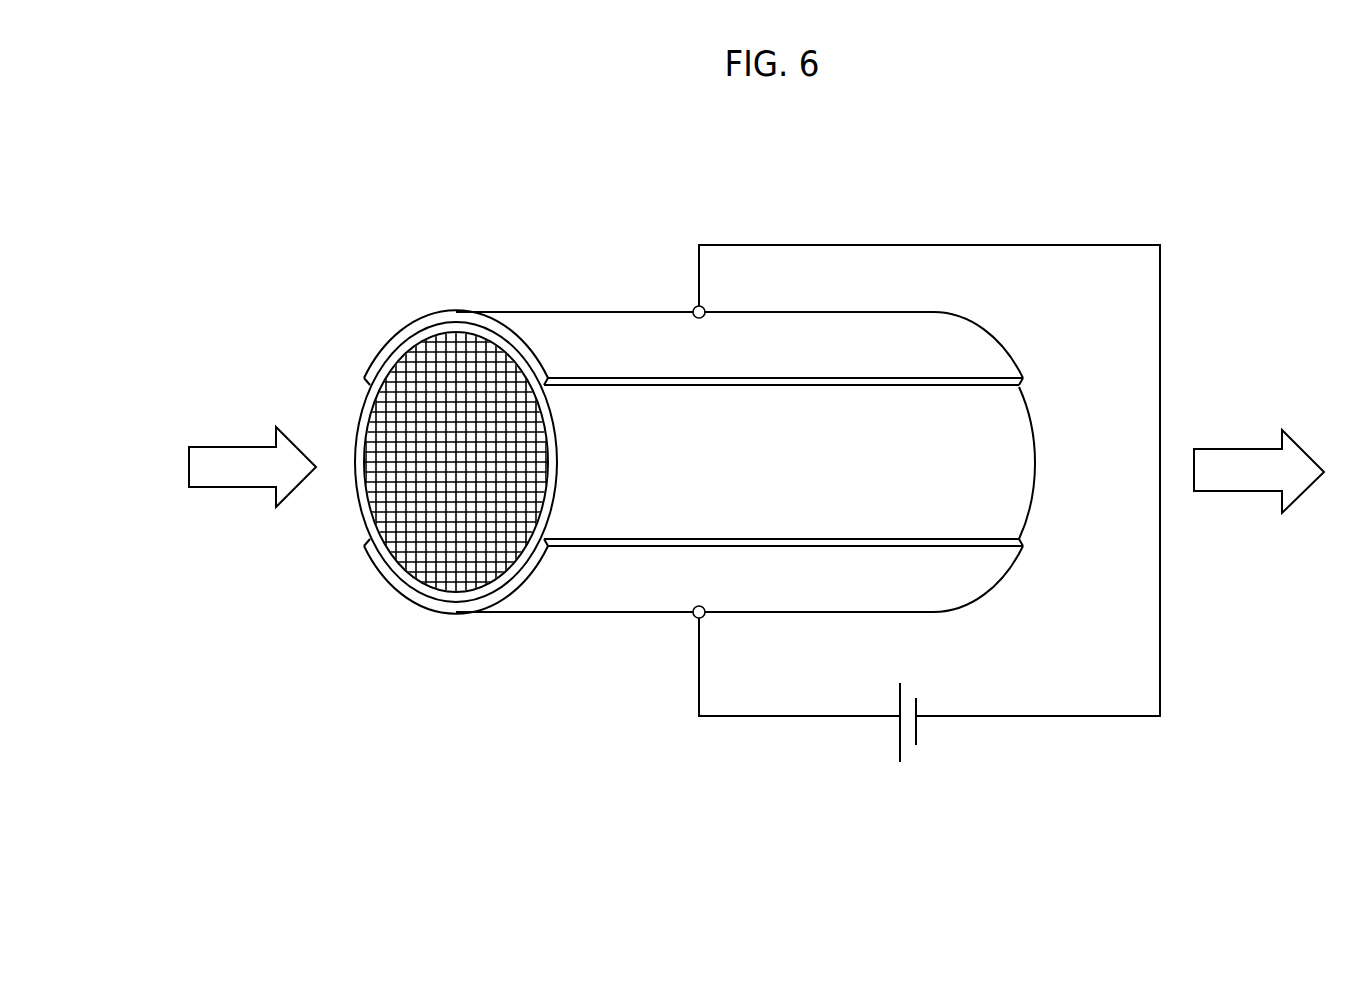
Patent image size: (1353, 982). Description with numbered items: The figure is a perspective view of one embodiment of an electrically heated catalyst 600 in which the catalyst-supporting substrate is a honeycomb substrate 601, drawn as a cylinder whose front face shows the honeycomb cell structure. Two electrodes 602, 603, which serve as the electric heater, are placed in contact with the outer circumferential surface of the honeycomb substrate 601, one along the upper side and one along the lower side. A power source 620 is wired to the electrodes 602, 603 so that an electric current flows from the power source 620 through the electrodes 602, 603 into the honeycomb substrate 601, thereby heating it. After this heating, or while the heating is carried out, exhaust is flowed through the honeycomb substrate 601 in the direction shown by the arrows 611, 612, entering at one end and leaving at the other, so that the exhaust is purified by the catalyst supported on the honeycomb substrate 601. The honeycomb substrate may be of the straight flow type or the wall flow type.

The electrically heated catalyst 600 is at (1005, 188).
The honeycomb substrate 601 is at (1010, 451).
The electrode 602 is at (558, 323).
The electrode 603 is at (558, 590).
The arrow 611 is at (212, 460).
The arrow 612 is at (1217, 465).
The power source 620 is at (918, 722).